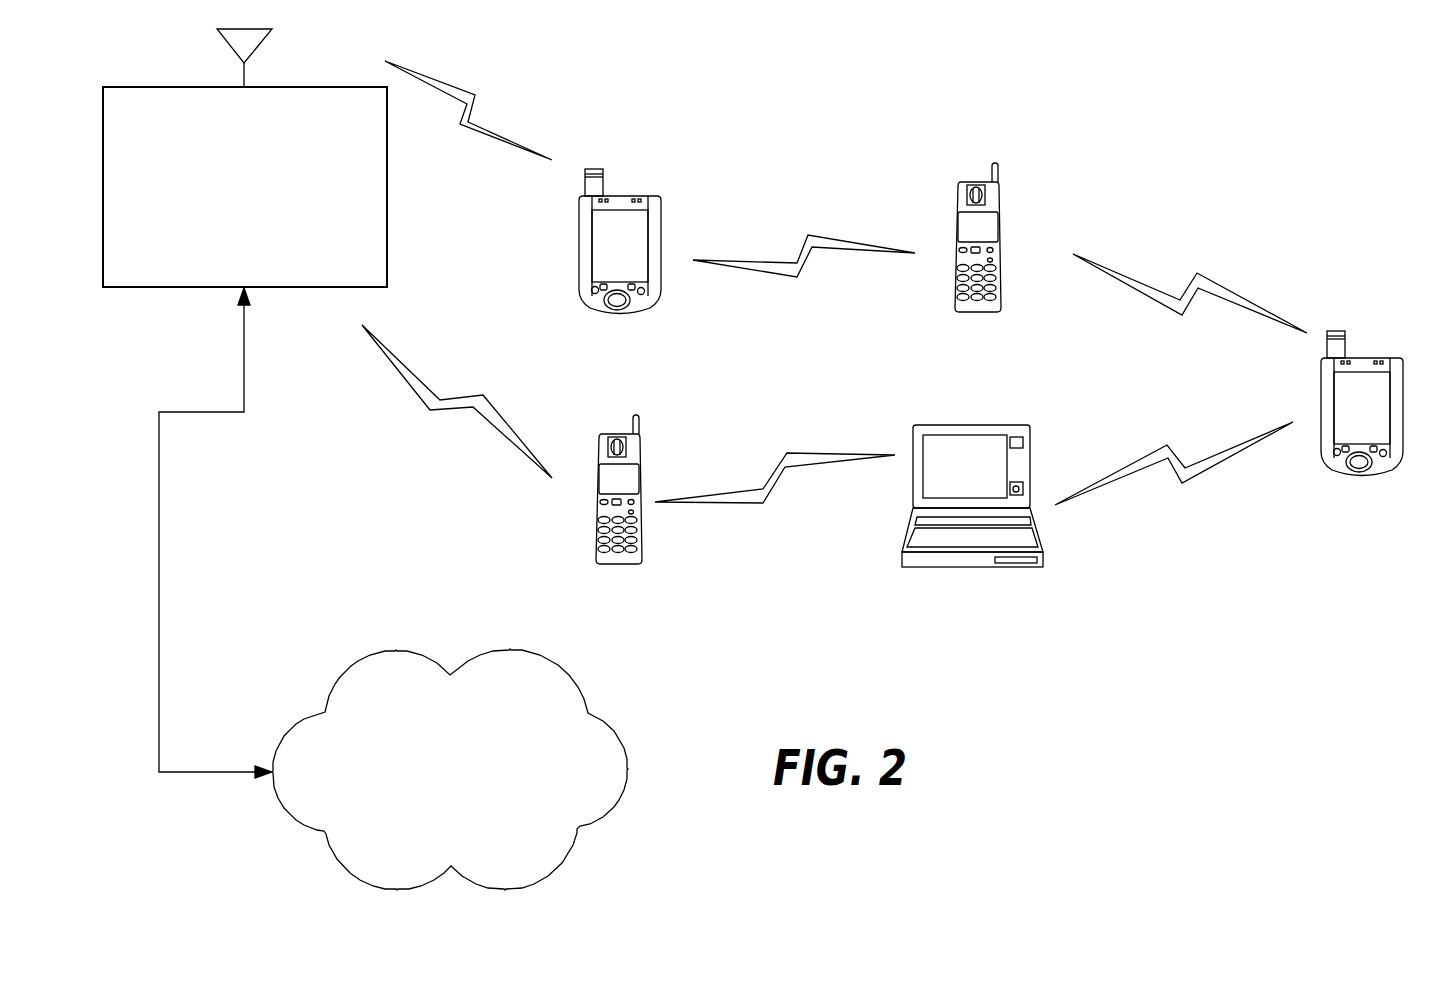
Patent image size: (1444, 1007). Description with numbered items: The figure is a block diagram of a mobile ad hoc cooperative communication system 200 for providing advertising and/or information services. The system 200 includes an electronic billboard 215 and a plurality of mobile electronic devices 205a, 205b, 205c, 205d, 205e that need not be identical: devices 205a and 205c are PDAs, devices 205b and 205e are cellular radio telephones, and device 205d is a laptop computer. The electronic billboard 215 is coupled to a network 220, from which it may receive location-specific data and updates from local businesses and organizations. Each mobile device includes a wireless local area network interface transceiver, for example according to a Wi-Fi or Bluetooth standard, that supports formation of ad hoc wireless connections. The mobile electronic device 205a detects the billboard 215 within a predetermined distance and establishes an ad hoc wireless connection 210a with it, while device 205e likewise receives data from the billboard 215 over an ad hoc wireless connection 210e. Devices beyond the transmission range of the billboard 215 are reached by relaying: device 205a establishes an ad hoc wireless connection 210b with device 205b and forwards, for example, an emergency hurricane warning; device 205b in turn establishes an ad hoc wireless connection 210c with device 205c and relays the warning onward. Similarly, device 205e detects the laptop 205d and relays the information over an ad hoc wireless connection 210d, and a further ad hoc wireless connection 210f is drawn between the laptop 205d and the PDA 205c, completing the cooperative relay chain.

The mobile ad hoc cooperative communication system 200 is at (833, 93).
The electronic billboard 215 is at (260, 206).
The network 220 is at (431, 799).
The mobile electronic device 205a is at (642, 391).
The mobile electronic device 205b is at (1000, 399).
The mobile electronic device 205c is at (1390, 551).
The mobile electronic device 205d is at (996, 641).
The mobile electronic device 205e is at (642, 651).
The ad hoc wireless connection 210a is at (457, 85).
The ad hoc wireless connection 210b is at (837, 237).
The ad hoc wireless connection 210c is at (1117, 267).
The ad hoc wireless connection 210d is at (798, 448).
The ad hoc wireless connection 210e is at (412, 397).
The ad hoc wireless connection 210f is at (1213, 457).